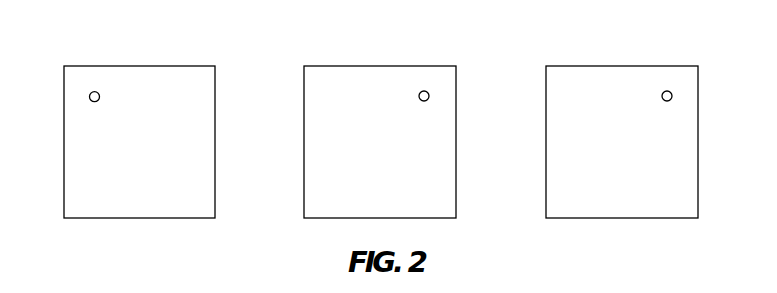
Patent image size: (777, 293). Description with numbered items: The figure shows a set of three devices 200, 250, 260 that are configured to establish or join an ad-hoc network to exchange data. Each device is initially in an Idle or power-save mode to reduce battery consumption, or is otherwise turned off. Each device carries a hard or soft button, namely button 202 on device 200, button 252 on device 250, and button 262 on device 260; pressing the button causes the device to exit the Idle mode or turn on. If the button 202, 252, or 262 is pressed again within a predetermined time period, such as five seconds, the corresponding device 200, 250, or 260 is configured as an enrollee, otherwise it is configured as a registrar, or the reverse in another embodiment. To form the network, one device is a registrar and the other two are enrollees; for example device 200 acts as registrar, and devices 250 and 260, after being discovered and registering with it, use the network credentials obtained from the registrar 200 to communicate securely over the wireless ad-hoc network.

The device 200 is at (140, 66).
The button 202 is at (90, 97).
The device 250 is at (380, 66).
The button 252 is at (429, 96).
The device 260 is at (622, 66).
The button 262 is at (672, 96).